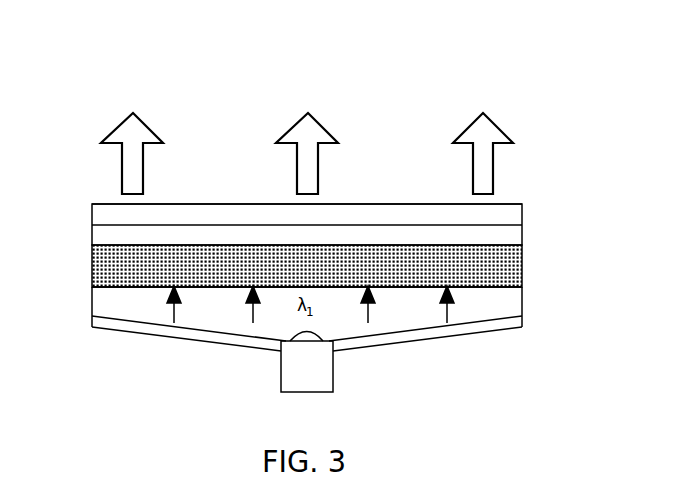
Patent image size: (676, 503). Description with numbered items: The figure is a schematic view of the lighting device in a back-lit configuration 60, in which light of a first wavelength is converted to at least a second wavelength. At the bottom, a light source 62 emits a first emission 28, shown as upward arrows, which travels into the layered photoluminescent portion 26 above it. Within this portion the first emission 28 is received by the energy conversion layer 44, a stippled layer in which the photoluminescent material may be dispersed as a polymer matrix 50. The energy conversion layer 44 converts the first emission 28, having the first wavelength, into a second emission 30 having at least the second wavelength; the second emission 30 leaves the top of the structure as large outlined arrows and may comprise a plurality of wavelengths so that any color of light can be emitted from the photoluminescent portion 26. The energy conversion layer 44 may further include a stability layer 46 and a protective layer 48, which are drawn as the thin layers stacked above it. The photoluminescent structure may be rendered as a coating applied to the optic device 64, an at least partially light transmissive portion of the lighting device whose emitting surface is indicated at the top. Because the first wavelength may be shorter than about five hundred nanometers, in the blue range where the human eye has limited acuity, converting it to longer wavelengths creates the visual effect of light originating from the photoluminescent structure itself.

The photoluminescent portion 26 is at (534, 217).
The first emission 28 is at (253, 309).
The second emission 30 is at (127, 172).
The energy conversion layer 44 is at (90, 257).
The stability layer 46 is at (102, 235).
The protective layer 48 is at (102, 215).
The polymer matrix 50 is at (90, 281).
The back-lit configuration 60 is at (538, 60).
The light source 62 is at (307, 362).
The optic device 64 is at (376, 186).